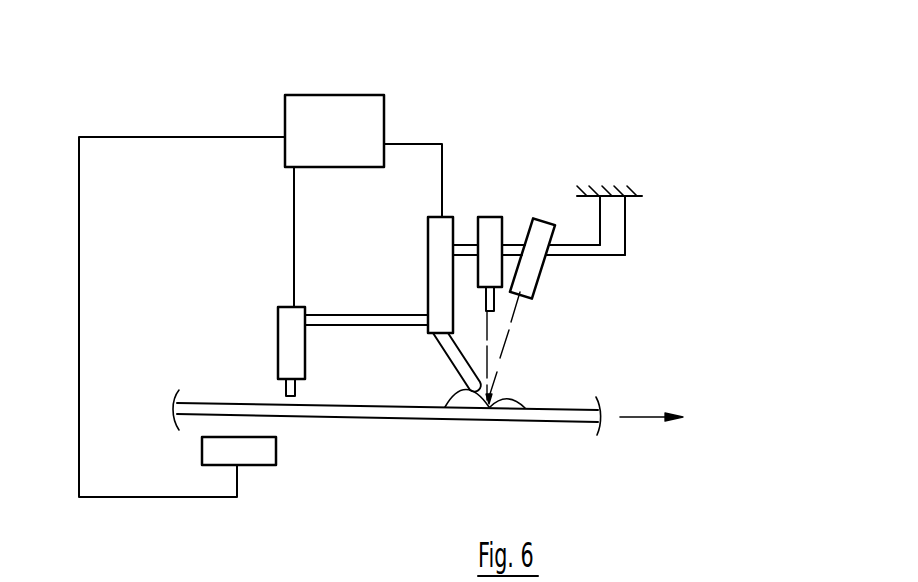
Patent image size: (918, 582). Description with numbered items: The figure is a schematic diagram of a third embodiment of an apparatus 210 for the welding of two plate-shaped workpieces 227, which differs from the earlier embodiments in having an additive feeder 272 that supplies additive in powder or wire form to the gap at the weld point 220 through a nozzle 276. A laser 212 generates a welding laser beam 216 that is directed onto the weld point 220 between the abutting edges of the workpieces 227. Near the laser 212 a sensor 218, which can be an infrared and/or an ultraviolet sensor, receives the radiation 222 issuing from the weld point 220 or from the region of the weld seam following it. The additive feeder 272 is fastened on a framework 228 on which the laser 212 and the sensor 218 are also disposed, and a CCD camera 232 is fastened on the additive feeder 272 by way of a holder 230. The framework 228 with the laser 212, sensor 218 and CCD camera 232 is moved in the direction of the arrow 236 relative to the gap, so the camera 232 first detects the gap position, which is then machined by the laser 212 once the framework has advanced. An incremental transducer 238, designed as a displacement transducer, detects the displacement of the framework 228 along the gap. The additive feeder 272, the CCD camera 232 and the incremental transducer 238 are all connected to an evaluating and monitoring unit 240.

The apparatus 210 is at (667, 134).
The laser 212 is at (488, 223).
The welding laser beam 216 is at (510, 335).
The sensor 218 is at (530, 278).
The weld point 220 is at (525, 420).
The radiation 222 is at (517, 313).
The plate-shaped workpieces 227 is at (577, 422).
The framework 228 is at (610, 230).
The holder 230 is at (368, 318).
The CCD camera 232 is at (293, 332).
The arrow 236 is at (653, 417).
The incremental transducer 238 is at (265, 452).
The evaluating and monitoring unit 240 is at (322, 122).
The additive feeder 272 is at (433, 236).
The nozzle 276 is at (445, 416).